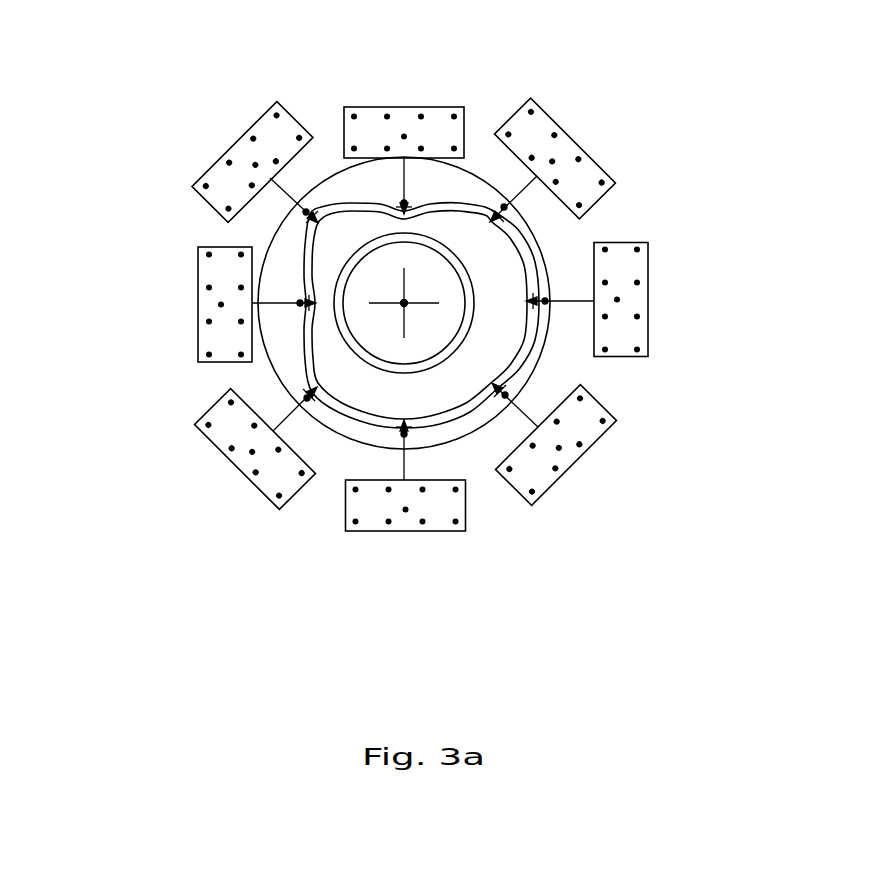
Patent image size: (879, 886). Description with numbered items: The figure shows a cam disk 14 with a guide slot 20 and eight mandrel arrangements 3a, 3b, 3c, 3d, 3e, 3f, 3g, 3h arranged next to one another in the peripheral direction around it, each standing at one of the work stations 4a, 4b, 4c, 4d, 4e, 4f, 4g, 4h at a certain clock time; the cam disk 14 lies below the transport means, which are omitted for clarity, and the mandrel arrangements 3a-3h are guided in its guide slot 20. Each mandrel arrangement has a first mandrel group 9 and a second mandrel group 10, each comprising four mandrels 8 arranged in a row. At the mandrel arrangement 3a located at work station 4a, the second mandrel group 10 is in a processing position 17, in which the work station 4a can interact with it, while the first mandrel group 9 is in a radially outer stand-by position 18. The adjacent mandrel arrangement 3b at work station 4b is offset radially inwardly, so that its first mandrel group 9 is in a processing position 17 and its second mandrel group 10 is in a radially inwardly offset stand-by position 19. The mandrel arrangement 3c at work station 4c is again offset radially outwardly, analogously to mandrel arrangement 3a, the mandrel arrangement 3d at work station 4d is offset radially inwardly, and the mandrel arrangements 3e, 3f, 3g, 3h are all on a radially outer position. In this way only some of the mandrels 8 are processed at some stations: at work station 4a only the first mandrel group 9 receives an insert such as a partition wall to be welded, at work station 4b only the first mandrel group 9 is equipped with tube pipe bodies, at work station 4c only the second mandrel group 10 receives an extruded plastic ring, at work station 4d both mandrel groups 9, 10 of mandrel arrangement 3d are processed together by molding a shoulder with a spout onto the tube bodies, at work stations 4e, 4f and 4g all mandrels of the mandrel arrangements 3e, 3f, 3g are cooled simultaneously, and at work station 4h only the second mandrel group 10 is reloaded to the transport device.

The mandrel arrangement 3a is at (402, 118).
The mandrel arrangement 3b is at (243, 148).
The mandrel arrangement 3c is at (212, 308).
The mandrel arrangement 3d is at (243, 458).
The mandrel arrangement 3e is at (408, 513).
The mandrel arrangement 3f is at (542, 478).
The mandrel arrangement 3g is at (640, 328).
The mandrel arrangement 3h is at (582, 173).
The work station 4a is at (357, 75).
The work station 4b is at (150, 153).
The work station 4c is at (122, 366).
The work station 4d is at (209, 545).
The work station 4e is at (440, 588).
The work station 4f is at (647, 503).
The work station 4g is at (699, 310).
The work station 4h is at (620, 98).
The mandrel 8 is at (536, 109).
The first mandrel group 9 is at (473, 110).
The second mandrel group 10 is at (472, 151).
The cam disk 14 is at (537, 353).
The processing position 17 is at (341, 114).
The stand-by position 18 is at (530, 102).
The stand-by position 19 is at (340, 152).
The guide slot 20 is at (470, 413).